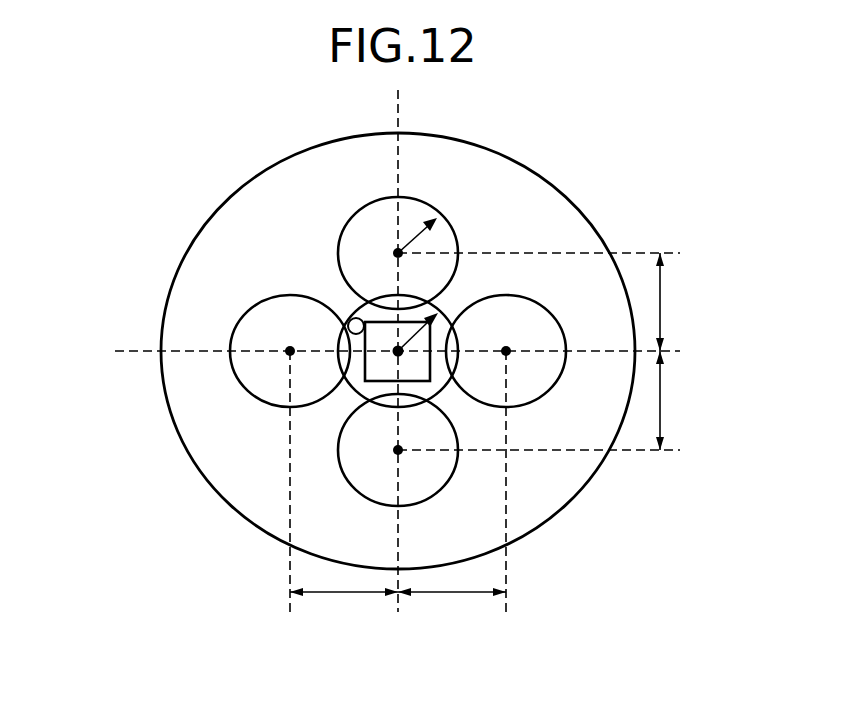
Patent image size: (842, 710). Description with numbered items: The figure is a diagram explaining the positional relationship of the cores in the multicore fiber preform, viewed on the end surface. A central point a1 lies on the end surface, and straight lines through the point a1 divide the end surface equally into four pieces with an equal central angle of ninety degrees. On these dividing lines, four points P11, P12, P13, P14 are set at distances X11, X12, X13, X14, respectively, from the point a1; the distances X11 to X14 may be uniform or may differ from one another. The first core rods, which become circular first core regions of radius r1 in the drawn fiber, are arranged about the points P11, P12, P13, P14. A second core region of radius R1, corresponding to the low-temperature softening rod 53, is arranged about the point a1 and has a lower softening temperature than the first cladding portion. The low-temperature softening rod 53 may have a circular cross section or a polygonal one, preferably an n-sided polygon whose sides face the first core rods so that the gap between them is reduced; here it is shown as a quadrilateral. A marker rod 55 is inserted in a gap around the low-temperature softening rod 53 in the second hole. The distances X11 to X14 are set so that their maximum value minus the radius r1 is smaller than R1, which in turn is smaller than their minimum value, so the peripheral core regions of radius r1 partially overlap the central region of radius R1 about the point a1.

The point P11 is at (397, 253).
The point P12 is at (506, 351).
The point P13 is at (398, 450).
The point P14 is at (290, 351).
The radius R1 is at (440, 322).
The radius r1 is at (398, 253).
The point a1 is at (398, 351).
The low-temperature softening rod 53 is at (375, 370).
The marker rod 55 is at (350, 321).
The distance X11 is at (667, 302).
The distance X12 is at (454, 594).
The distance X13 is at (667, 401).
The distance X14 is at (347, 594).